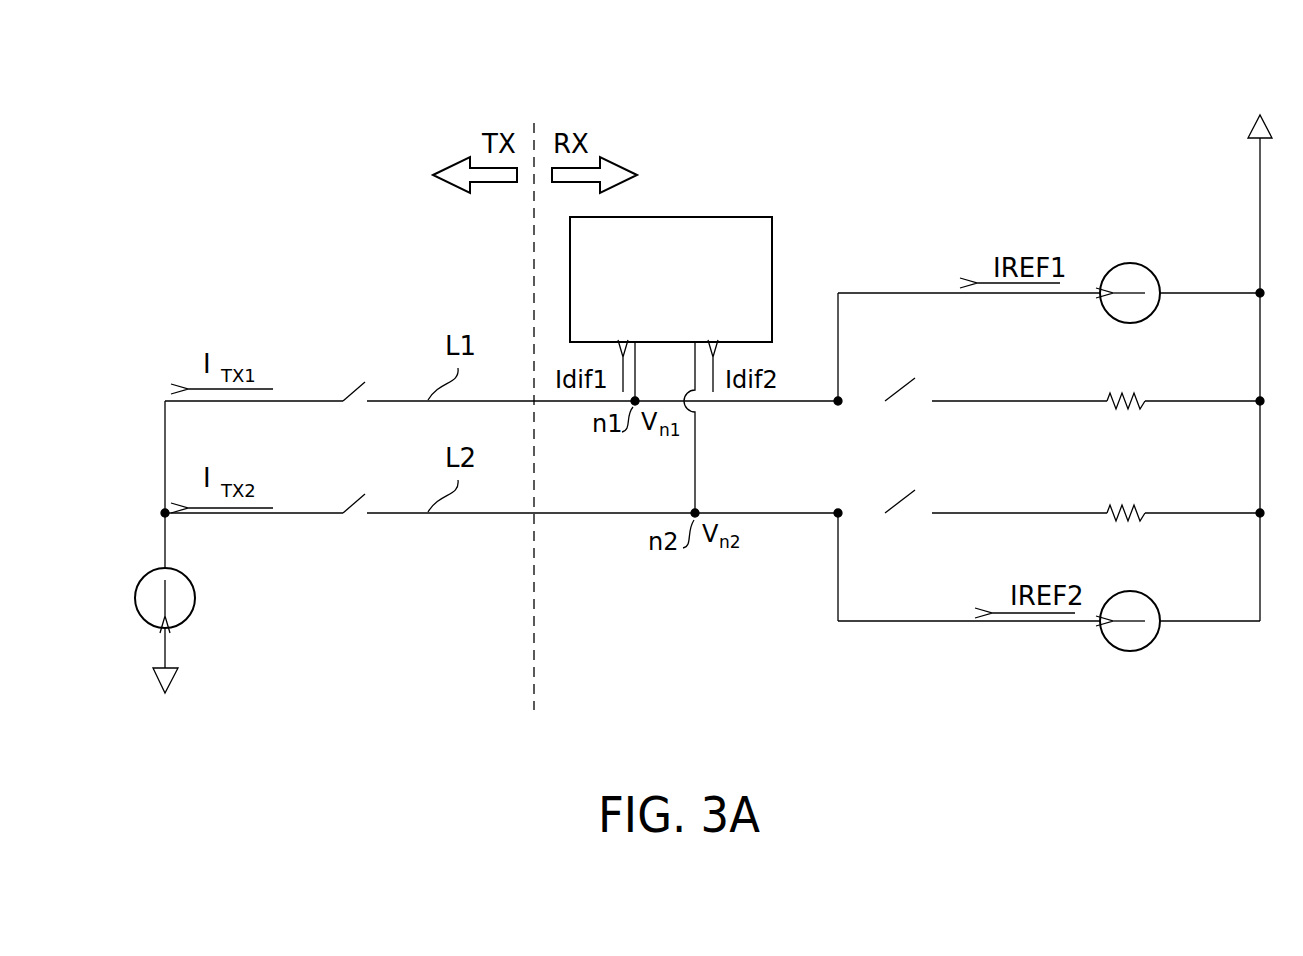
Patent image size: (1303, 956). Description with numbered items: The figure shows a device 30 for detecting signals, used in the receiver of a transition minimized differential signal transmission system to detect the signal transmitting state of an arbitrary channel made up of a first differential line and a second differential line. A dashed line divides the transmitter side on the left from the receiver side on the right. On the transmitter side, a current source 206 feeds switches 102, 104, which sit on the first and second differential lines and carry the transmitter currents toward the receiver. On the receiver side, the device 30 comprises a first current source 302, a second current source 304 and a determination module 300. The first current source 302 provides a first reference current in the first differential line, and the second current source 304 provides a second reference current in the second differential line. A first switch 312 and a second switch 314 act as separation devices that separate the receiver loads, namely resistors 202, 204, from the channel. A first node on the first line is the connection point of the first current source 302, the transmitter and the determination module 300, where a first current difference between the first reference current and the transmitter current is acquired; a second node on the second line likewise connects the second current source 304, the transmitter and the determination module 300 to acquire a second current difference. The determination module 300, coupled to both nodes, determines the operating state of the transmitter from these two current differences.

The device for detecting signals 30 is at (1120, 128).
The switch 102 is at (350, 393).
The switch 104 is at (350, 505).
The resistor 202 is at (1131, 396).
The resistor 204 is at (1131, 508).
The current source 206 is at (196, 598).
The determination module 300 is at (772, 268).
The first current source 302 is at (1152, 275).
The second current source 304 is at (1152, 603).
The first switch 312 is at (896, 392).
The second switch 314 is at (896, 504).